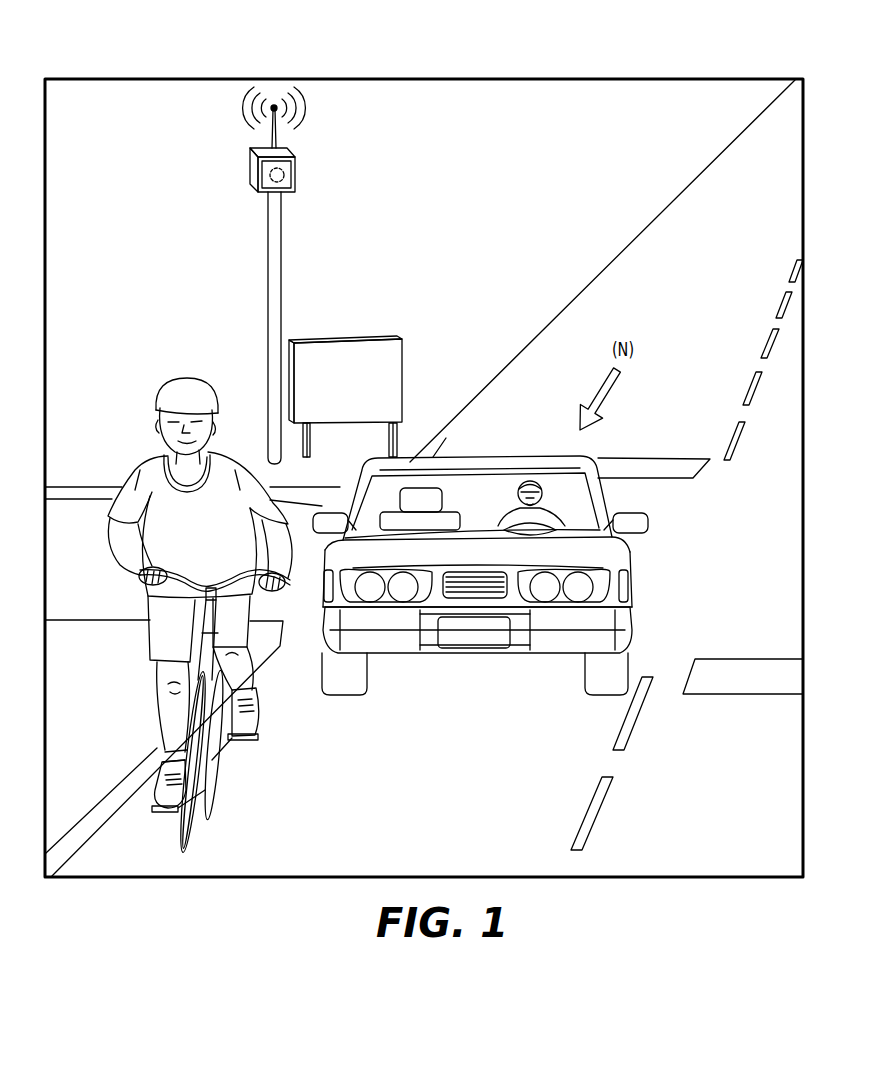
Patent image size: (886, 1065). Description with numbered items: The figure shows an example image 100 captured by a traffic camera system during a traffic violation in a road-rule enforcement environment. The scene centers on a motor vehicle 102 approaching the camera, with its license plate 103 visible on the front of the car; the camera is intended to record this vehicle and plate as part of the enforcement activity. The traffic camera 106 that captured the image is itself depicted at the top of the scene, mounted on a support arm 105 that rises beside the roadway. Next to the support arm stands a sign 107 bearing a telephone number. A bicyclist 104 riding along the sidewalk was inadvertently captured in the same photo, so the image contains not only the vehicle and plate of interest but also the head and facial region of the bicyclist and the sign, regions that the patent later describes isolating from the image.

The image 100 is at (467, 70).
The motor vehicle 102 is at (628, 567).
The license plate 103 is at (474, 649).
The bicyclist 104 is at (187, 378).
The support arm 105 is at (268, 277).
The traffic camera 106 is at (292, 148).
The sign 107 is at (344, 340).